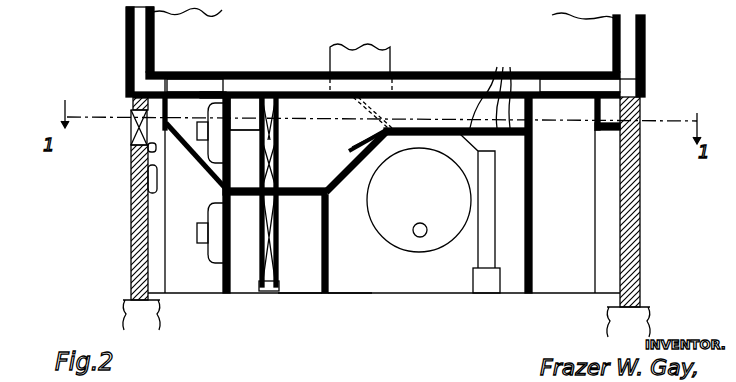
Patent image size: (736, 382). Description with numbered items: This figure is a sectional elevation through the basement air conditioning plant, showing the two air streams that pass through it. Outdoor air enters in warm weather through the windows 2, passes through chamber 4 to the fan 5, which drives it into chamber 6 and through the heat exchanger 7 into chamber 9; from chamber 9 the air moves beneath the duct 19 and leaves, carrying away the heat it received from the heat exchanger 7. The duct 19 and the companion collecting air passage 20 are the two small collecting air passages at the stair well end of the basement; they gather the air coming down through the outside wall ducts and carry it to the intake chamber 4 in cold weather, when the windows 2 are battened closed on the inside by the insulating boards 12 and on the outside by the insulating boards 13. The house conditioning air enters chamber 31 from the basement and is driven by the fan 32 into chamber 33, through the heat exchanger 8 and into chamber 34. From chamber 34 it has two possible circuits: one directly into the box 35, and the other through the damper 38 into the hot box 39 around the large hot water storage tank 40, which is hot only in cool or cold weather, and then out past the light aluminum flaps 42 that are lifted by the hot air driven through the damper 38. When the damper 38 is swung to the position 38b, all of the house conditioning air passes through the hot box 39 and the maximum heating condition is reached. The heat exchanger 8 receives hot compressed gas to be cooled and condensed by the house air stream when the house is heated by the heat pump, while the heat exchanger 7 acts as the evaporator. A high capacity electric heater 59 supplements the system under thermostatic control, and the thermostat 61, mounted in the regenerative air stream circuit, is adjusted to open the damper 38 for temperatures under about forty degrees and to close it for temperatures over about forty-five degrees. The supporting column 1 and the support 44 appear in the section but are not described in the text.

The left supporting column 1 is at (132, 233).
The window 2 is at (128, 118).
The chamber 4 is at (207, 198).
The fan 5 is at (220, 258).
The chamber 6 is at (248, 277).
The heat exchanger 7 is at (278, 278).
The heat exchanger 8 is at (278, 110).
The chamber 9 is at (300, 277).
The insulating board 12 is at (132, 150).
The insulating board 13 is at (130, 133).
The collecting air passage 19 is at (182, 83).
The collecting air passage 20 is at (565, 85).
The chamber 31 is at (190, 133).
The fan 32 is at (213, 90).
The chamber 33 is at (245, 103).
The chamber 34 is at (305, 162).
The box 35 is at (430, 107).
The damper 38 is at (360, 148).
The damper position 38b is at (358, 102).
The hot box 39 is at (373, 273).
The hot water storage tank 40 is at (388, 225).
The aluminum flap 42 is at (490, 88).
The support post 44 is at (483, 253).
The electric heater 59 is at (425, 226).
The thermostat 61 is at (133, 187).